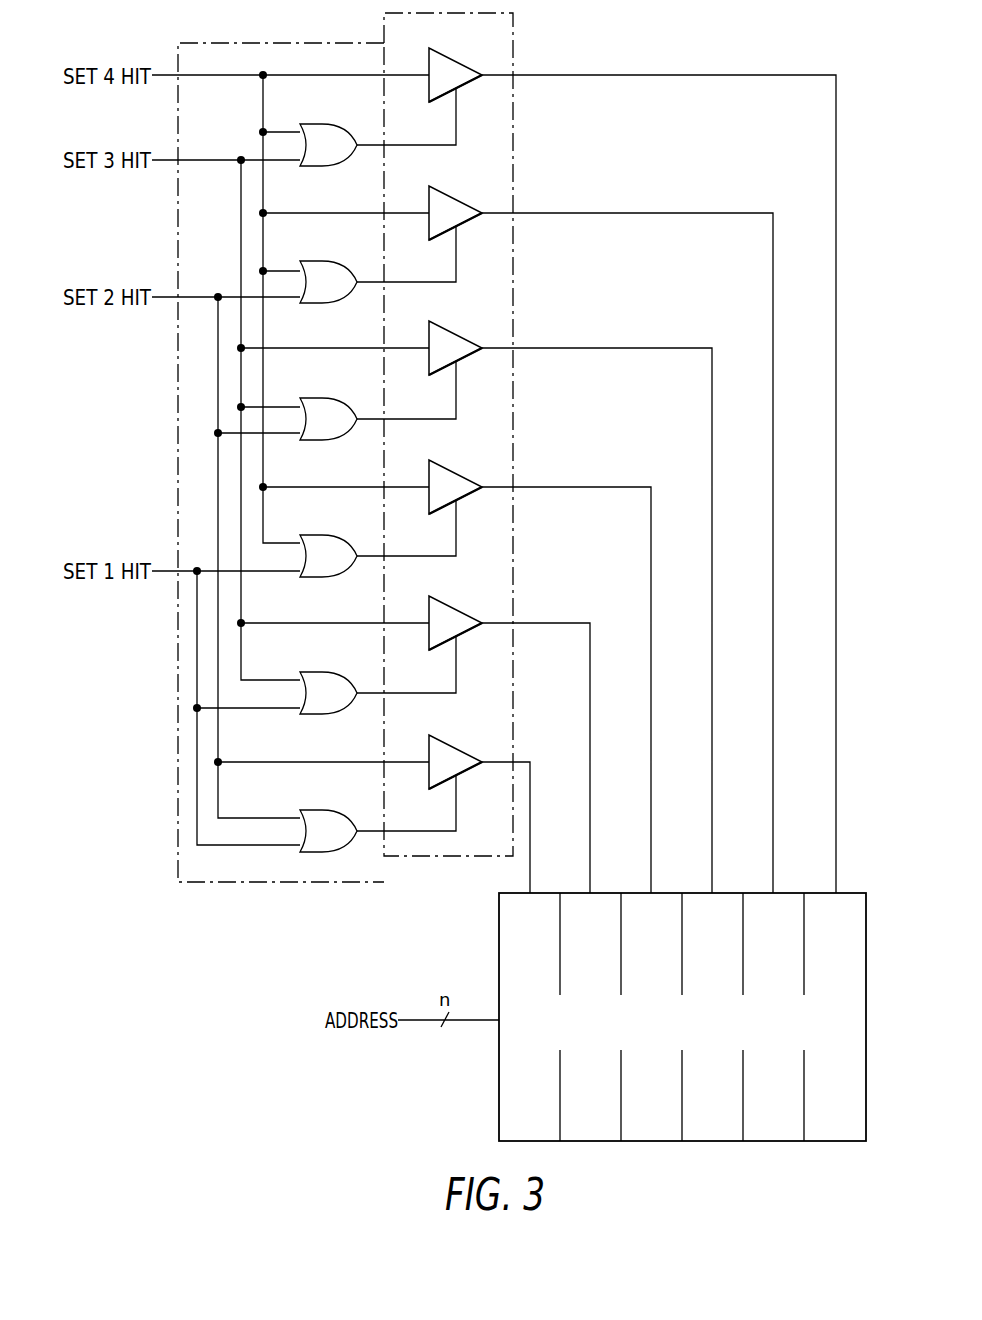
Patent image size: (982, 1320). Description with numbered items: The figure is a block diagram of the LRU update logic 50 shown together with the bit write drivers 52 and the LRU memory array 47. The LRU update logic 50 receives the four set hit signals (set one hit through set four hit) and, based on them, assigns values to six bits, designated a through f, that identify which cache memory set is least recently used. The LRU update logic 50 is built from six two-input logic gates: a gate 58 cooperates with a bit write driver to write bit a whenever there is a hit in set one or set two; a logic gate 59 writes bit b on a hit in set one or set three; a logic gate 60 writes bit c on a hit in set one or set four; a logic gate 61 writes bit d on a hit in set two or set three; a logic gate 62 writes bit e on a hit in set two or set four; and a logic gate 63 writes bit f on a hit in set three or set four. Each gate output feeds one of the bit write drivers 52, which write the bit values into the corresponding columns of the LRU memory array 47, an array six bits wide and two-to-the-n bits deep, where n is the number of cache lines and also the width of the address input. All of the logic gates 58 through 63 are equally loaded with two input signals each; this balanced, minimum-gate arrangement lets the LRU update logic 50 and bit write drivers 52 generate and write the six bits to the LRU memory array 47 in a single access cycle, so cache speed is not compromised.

The LRU memory array 47 is at (866, 908).
The LRU update logic 50 is at (222, 882).
The bit write drivers 52 is at (513, 13).
The gate 58 is at (317, 809).
The logic gate 59 is at (317, 671).
The logic gate 60 is at (317, 534).
The logic gate 61 is at (317, 397).
The logic gate 62 is at (317, 260).
The logic gate 63 is at (317, 123).